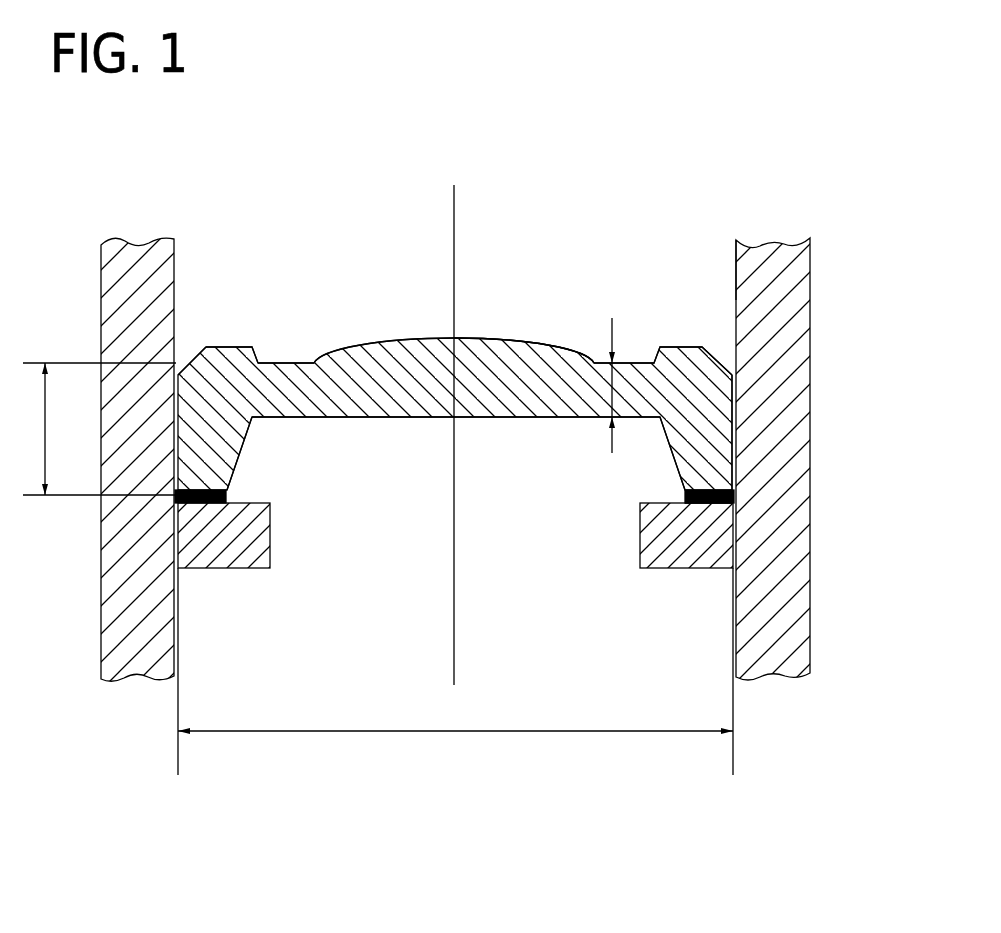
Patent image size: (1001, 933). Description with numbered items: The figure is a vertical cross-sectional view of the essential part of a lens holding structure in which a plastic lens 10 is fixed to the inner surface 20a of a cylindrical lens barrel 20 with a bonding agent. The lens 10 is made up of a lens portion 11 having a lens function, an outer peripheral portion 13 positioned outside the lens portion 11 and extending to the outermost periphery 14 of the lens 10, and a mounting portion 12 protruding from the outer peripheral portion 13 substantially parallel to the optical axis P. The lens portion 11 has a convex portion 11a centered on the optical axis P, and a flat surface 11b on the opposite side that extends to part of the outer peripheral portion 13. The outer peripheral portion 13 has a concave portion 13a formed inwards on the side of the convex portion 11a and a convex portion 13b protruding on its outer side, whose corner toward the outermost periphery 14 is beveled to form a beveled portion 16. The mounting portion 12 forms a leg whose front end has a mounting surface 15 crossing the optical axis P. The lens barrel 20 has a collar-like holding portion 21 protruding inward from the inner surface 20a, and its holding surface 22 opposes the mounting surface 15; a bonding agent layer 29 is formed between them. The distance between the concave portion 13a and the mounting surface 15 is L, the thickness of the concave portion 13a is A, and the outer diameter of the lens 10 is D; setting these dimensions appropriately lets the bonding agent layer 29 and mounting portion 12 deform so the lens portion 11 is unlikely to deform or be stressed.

The lens 10 is at (455, 338).
The lens portion 11 is at (374, 355).
The convex portion 11a is at (522, 343).
The flat surface 11b is at (397, 418).
The mounting portion 12 is at (690, 460).
The outer peripheral portion 13 is at (597, 308).
The concave portion 13a is at (288, 362).
The convex portion 13b is at (233, 347).
The outermost periphery 14 is at (733, 457).
The mounting surface 15 is at (213, 503).
The beveled portion 16 is at (200, 357).
The lens barrel 20 is at (822, 417).
The inner surface 20a is at (736, 258).
The holding portion 21 is at (676, 546).
The holding surface 22 is at (652, 498).
The bonding agent layer 29 is at (710, 503).
The optical axis P is at (454, 203).
The thickness of the concave portion A is at (625, 385).
The distance between the concave portion and the mounting surface L is at (96, 429).
The outer diameter of the lens D is at (455, 672).